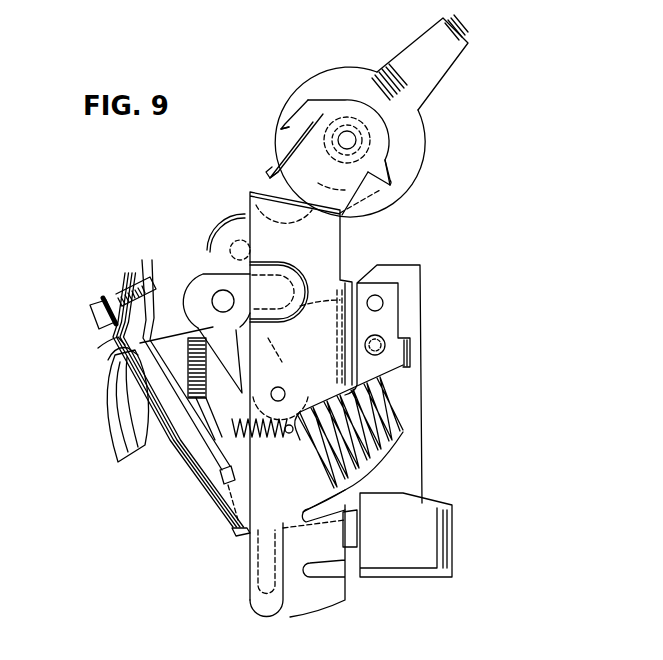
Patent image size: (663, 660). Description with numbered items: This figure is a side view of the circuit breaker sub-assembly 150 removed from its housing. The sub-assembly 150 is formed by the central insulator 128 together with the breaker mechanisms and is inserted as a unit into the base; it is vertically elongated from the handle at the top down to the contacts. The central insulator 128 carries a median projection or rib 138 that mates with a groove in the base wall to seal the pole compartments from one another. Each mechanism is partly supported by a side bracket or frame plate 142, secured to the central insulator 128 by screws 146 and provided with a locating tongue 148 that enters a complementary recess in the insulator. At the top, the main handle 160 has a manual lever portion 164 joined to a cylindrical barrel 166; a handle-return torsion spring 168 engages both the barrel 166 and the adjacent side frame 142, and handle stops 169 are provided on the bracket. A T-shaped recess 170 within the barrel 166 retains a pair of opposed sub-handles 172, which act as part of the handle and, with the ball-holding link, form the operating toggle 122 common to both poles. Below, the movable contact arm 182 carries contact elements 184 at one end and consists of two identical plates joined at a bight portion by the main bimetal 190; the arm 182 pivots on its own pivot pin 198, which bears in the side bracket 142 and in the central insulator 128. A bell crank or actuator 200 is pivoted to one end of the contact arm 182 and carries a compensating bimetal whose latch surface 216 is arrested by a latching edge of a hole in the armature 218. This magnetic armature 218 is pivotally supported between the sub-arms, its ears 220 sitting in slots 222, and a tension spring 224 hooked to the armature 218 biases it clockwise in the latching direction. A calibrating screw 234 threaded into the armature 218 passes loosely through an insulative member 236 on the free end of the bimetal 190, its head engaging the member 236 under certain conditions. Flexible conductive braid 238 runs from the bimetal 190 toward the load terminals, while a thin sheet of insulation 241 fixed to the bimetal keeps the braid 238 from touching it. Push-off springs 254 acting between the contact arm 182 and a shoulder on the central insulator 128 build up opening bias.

The operating toggle 122 is at (208, 220).
The central insulator block 128 is at (432, 407).
The median projection or rib 138 is at (446, 543).
The side bracket or frame plate 142 is at (252, 202).
The screws 146 is at (385, 338).
The locating tongue 148 is at (408, 350).
The subassembly 150 is at (449, 288).
The main handle 160 is at (451, 136).
The manual lever portion 164 is at (418, 47).
The cylindrical barrel or body portion 166 is at (319, 75).
The handle-return torsion spring 168 is at (390, 167).
The handle stops 169 is at (265, 171).
The T-shaped recess 170 is at (281, 131).
The sub-handles 172 is at (363, 213).
The movable contact arm 182 is at (198, 320).
The contact elements 184 is at (353, 533).
The main bimetal 190 is at (97, 303).
The pivot pin 198 is at (282, 388).
The bell crank or actuator 200 is at (197, 254).
The latch surface 216 is at (123, 348).
The armature 218 is at (128, 274).
The ears 220 is at (210, 507).
The slots 222 is at (221, 480).
The tension spring 224 is at (284, 470).
The calibrating screw 234 is at (116, 298).
The insulative member 236 is at (98, 348).
The flexible conductive braid 238 is at (128, 433).
The flexible sheet of insulation 241 is at (183, 463).
The push-off springs 254 is at (393, 437).